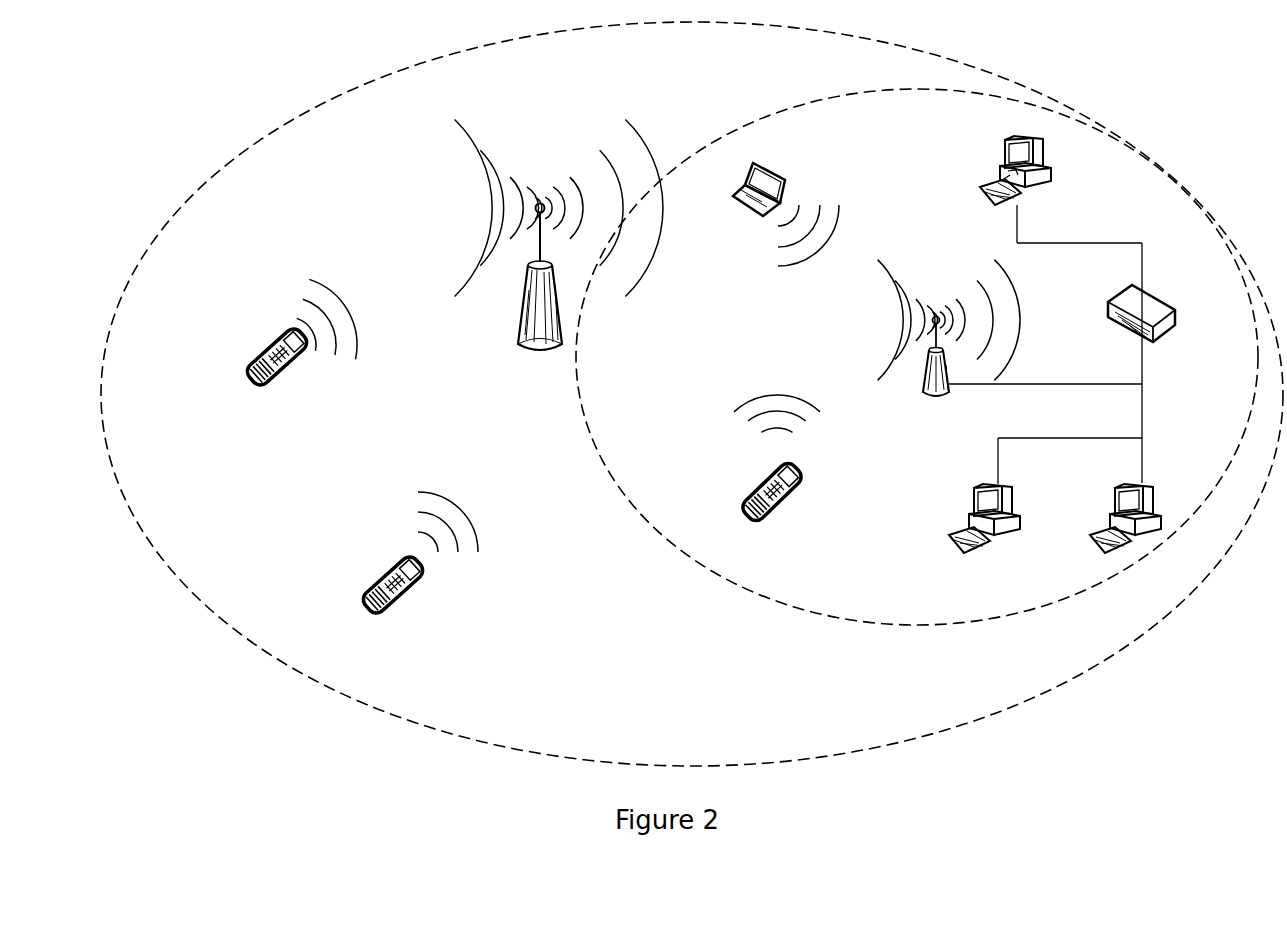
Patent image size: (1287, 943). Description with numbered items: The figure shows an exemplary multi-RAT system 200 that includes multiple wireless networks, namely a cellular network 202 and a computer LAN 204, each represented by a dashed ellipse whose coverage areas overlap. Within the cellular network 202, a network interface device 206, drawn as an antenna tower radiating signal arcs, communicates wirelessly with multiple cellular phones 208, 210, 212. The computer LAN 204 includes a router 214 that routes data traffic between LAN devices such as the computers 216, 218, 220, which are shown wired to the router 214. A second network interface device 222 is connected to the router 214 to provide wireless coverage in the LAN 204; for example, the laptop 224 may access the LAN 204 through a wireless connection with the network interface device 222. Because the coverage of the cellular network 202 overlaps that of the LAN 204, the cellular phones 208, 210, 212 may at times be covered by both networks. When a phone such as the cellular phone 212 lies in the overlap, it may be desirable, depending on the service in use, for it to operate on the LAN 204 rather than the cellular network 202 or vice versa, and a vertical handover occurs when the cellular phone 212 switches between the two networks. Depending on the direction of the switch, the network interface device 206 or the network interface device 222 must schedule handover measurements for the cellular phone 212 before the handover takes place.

The multi-RAT system 200 is at (119, 84).
The cellular network 202 is at (617, 724).
The computer LAN 204 is at (897, 614).
The network interface device 206 is at (559, 254).
The cellular phone 208 is at (300, 343).
The cellular phone 210 is at (419, 563).
The cellular phone 212 is at (779, 472).
The router 214 is at (1105, 363).
The computer 216 is at (1061, 189).
The computer 218 is at (965, 495).
The computer 220 is at (1112, 511).
The network interface device 222 is at (1010, 341).
The laptop 224 is at (786, 208).